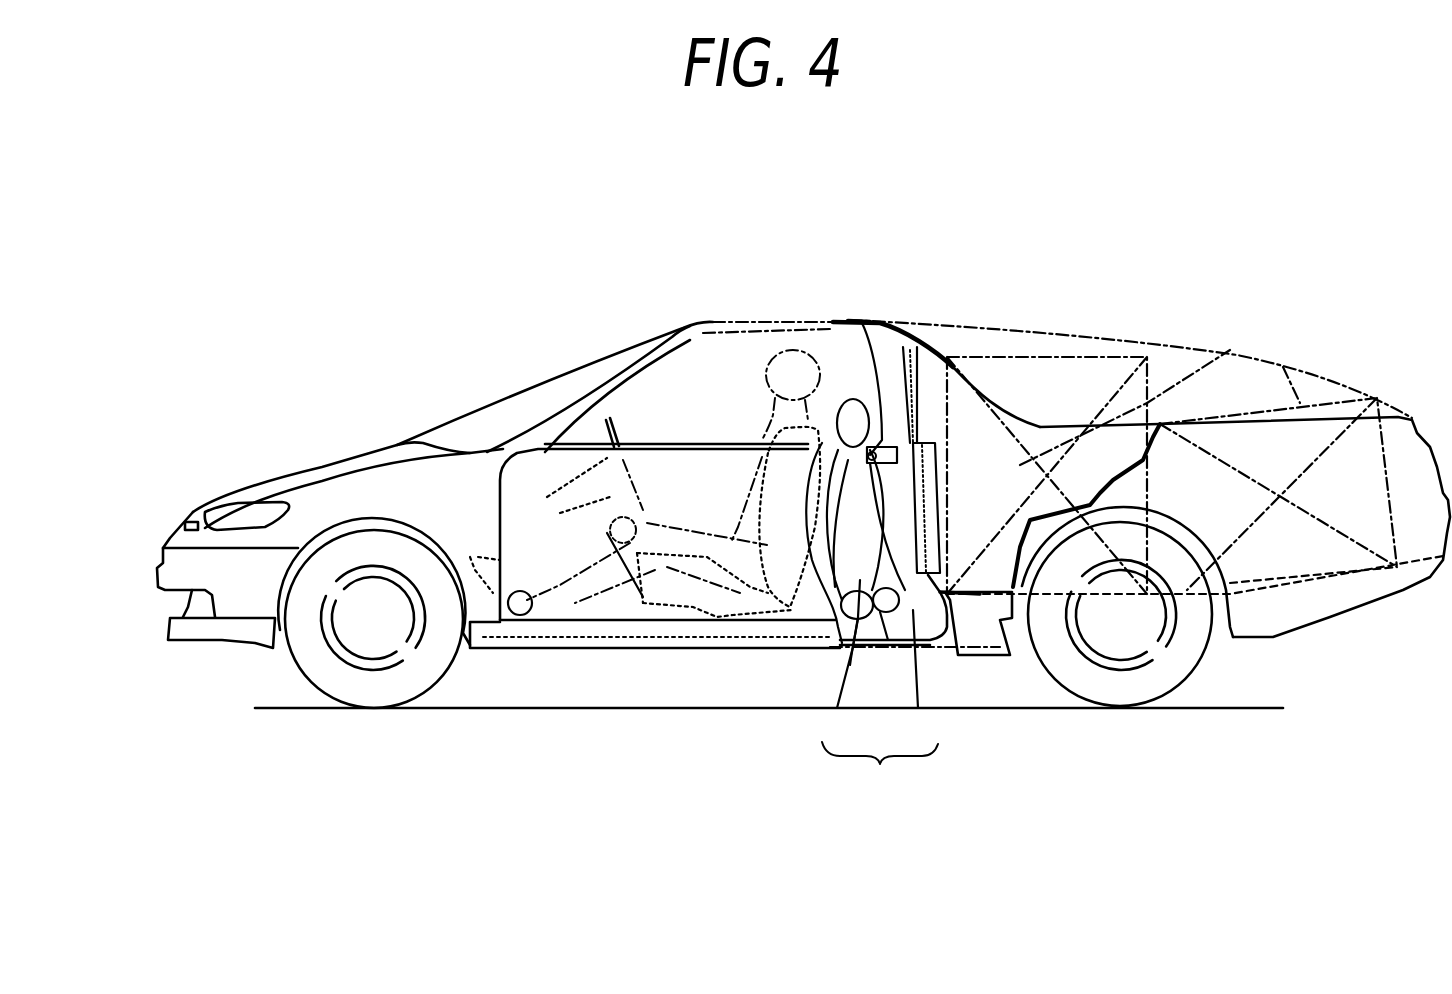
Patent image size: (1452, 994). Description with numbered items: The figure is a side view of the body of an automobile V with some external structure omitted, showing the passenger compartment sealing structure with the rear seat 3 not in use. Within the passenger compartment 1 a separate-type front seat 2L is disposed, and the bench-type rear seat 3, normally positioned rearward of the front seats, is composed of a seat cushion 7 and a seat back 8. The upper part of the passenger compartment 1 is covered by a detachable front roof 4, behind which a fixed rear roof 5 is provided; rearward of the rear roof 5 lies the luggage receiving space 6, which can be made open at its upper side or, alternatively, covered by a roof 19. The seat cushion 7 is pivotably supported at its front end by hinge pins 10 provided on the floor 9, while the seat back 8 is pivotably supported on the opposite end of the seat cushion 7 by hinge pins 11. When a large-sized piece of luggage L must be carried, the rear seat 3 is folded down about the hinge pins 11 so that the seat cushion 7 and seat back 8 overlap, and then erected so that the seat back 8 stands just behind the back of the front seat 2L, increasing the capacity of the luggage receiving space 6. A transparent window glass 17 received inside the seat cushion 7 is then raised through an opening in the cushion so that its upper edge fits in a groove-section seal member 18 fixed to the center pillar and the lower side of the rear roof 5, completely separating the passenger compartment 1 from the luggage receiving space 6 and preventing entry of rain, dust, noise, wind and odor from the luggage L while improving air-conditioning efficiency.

The automobile V is at (548, 362).
The passenger compartment 1 is at (716, 399).
The front seat 2L is at (710, 643).
The rear seat 3 is at (880, 772).
The front roof 4 is at (755, 320).
The rear roof 5 is at (857, 320).
The luggage receiving space 6 is at (1102, 477).
The seat cushion 7 is at (921, 683).
The seat back 8 is at (886, 666).
The floor 9 is at (567, 613).
The hinge pin 10 is at (955, 640).
The hinge pin 11 is at (875, 447).
The window glass 17 is at (915, 420).
The seal member 18 is at (923, 417).
The roof 19 is at (1057, 327).
The luggage L is at (1283, 367).